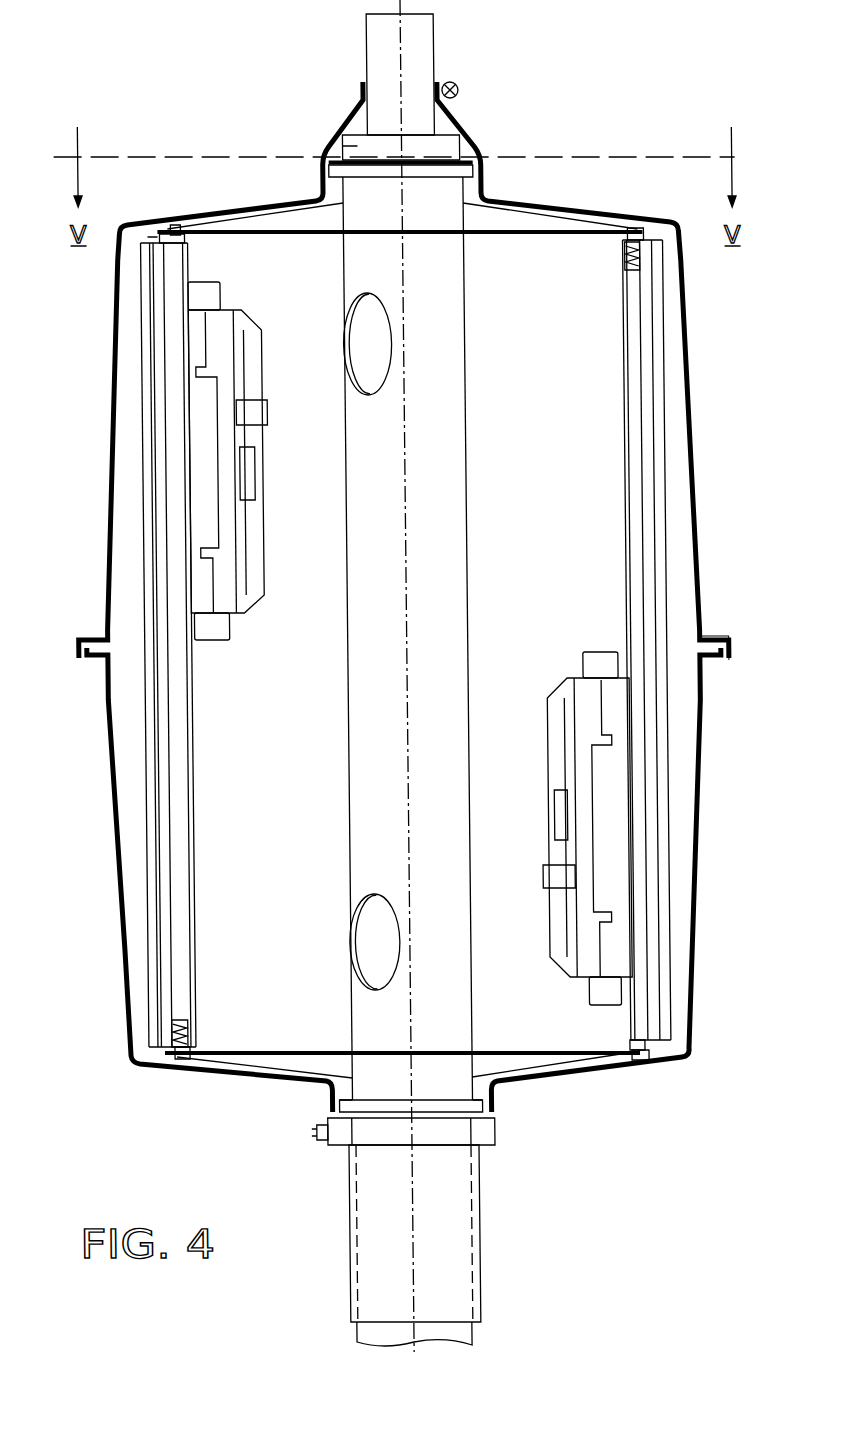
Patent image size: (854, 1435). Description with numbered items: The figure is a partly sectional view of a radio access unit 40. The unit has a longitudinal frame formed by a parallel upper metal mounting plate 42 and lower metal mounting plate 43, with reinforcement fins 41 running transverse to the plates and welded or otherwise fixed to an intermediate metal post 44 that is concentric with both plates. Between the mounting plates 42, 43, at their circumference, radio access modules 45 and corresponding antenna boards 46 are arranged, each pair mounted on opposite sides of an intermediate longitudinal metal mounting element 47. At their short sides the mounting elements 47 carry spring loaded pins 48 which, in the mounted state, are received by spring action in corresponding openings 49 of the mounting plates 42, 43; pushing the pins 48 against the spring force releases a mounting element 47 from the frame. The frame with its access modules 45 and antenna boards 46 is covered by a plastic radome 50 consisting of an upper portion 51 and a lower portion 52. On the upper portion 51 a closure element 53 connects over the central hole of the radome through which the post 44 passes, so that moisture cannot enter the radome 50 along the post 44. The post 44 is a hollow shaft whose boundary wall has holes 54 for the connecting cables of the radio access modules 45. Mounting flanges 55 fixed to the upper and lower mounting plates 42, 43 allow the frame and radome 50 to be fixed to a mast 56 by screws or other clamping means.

The radio access unit 40 is at (605, 1088).
The reinforcement fins 41 is at (298, 221).
The upper metal mounting plate 42 is at (518, 234).
The lower metal mounting plate 43 is at (240, 1051).
The intermediate metal post 44 is at (456, 531).
The radio access modules 45 is at (253, 528).
The antenna boards 46 is at (142, 740).
The longitudinal metal mounting element 47 is at (629, 425).
The spring loaded pins 48 is at (172, 226).
The openings 49 is at (178, 241).
The plastic radome 50 is at (713, 603).
The upper portion of the radome 51 is at (687, 332).
The lower portion of the radome 52 is at (115, 973).
The closure element 53 is at (454, 115).
The holes 54 is at (358, 341).
The mounting flanges 55 is at (352, 146).
The mast 56 is at (429, 52).